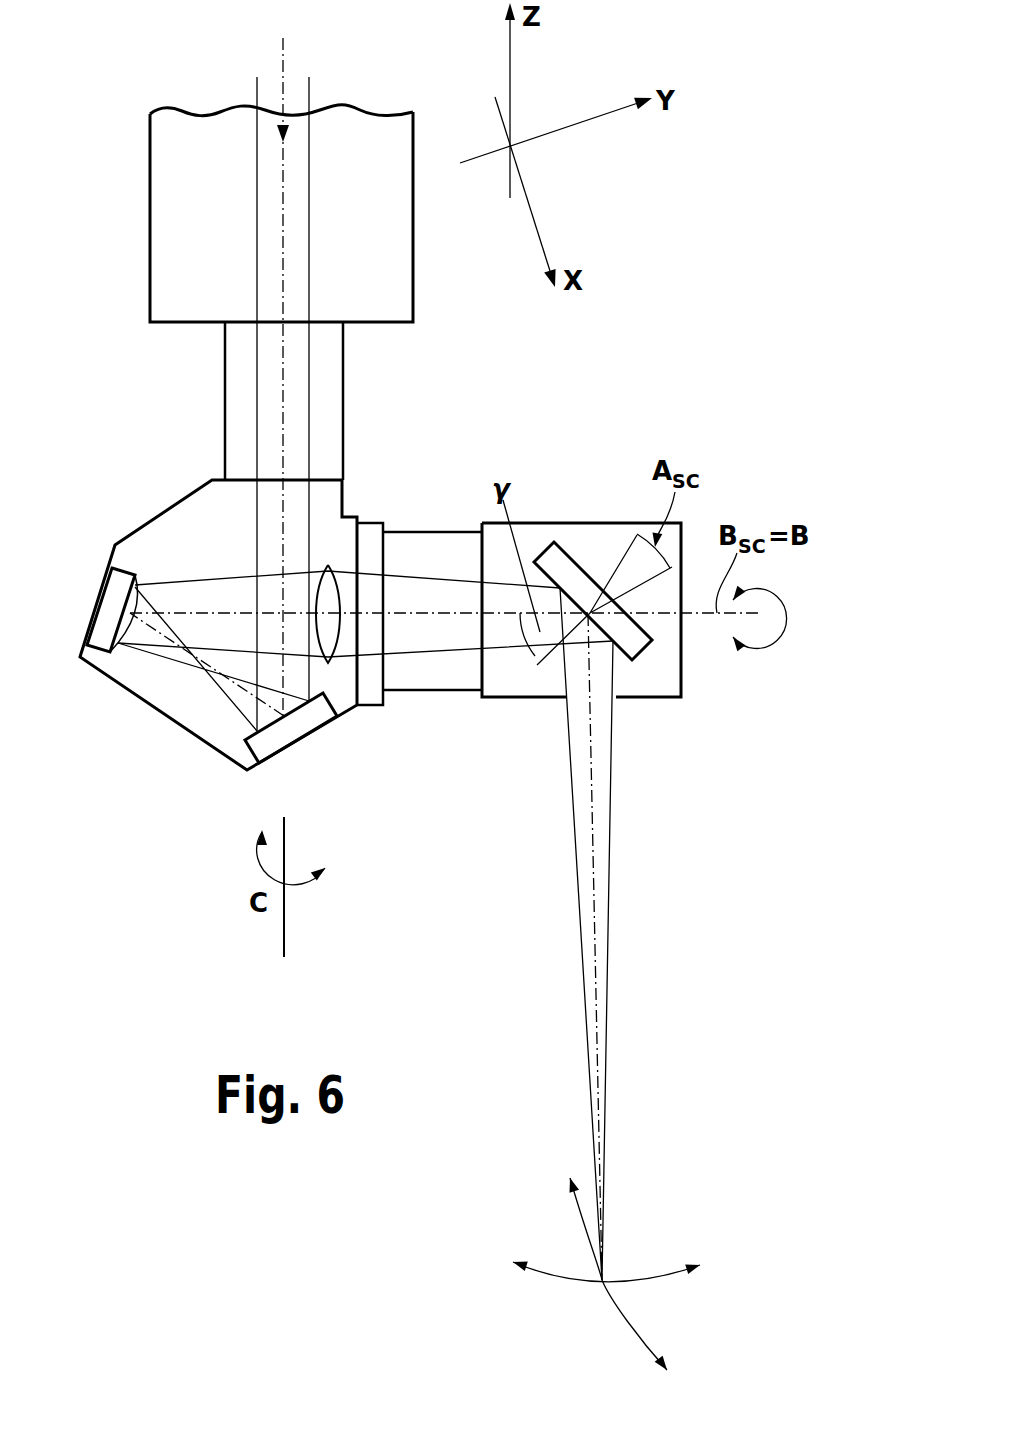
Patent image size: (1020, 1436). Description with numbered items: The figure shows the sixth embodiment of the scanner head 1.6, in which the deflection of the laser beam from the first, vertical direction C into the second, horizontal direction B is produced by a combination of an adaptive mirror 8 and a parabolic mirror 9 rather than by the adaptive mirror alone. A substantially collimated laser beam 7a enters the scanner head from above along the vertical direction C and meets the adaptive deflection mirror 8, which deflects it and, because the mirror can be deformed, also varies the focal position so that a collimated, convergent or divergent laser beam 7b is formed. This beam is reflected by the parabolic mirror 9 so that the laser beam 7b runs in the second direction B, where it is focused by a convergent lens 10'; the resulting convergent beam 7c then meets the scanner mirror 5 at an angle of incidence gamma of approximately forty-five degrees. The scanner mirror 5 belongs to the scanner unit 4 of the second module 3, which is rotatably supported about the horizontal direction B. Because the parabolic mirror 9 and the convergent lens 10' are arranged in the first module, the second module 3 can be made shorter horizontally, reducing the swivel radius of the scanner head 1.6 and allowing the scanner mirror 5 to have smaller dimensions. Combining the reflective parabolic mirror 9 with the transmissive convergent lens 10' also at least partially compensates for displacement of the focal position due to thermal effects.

The scanner head 1.6 is at (682, 300).
The second module 3 is at (450, 728).
The scanner unit 4 is at (580, 522).
The scanner mirror 5 is at (642, 645).
The laser beam 7a is at (283, 387).
The laser beam 7b is at (213, 613).
The convergent beam 7c is at (442, 615).
The adaptive deflection mirror 8 is at (297, 727).
The parabolic mirror 9 is at (113, 607).
The convergent lens 10' is at (360, 568).